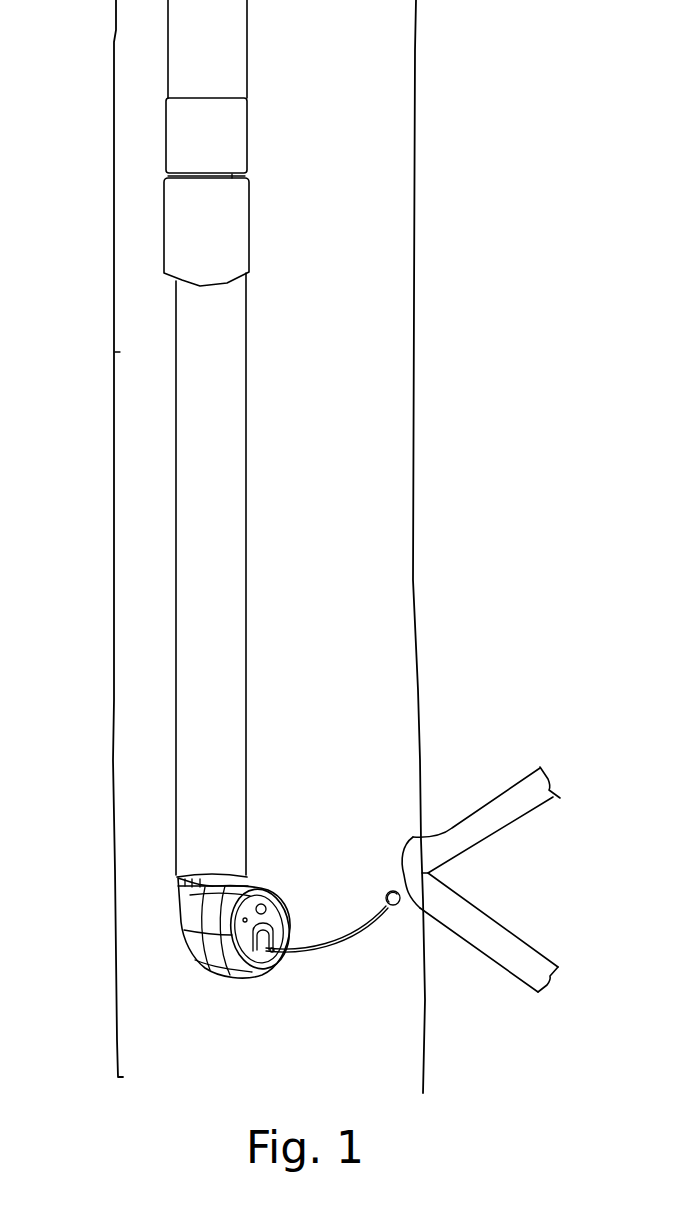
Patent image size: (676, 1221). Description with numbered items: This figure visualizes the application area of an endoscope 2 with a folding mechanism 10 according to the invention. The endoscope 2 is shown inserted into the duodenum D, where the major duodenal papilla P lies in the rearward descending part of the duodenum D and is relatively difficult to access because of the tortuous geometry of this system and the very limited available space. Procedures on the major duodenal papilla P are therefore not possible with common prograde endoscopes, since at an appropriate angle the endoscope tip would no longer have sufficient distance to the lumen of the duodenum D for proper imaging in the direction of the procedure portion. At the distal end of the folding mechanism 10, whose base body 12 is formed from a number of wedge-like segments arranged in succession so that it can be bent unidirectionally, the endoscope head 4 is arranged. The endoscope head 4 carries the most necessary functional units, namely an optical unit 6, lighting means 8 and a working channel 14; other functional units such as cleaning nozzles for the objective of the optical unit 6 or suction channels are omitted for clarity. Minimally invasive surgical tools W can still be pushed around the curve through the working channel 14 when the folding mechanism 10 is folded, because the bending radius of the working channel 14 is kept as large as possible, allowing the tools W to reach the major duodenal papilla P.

The endoscope 2 is at (143, 725).
The endoscope head 4 is at (189, 908).
The optical unit 6 is at (270, 896).
The lighting means 8 is at (247, 917).
The folding mechanism 10 is at (160, 942).
The base body 12 is at (182, 938).
The working channel 14 is at (255, 979).
The duodenum D is at (113, 867).
The major duodenal papilla P is at (415, 837).
The minimally invasive surgical tools W is at (465, 890).